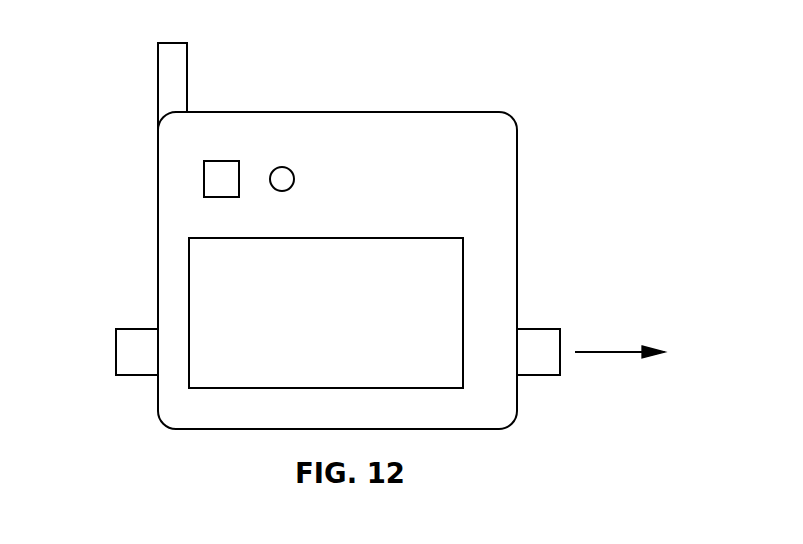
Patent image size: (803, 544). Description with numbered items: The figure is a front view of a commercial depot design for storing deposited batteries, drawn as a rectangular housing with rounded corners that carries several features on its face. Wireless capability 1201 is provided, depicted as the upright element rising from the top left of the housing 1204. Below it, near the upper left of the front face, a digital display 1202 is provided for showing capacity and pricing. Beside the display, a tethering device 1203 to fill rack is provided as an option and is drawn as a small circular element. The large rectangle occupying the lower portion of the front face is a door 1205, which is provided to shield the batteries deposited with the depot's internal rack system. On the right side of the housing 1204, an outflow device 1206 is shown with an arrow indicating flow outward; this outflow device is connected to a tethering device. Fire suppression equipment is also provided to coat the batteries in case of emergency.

The wireless capability 1201 is at (172, 85).
The digital display 1202 is at (222, 177).
The tethering device 1203 is at (282, 167).
The device housing 1204 is at (463, 142).
The door 1205 is at (443, 292).
The outflow device 1206 is at (546, 343).